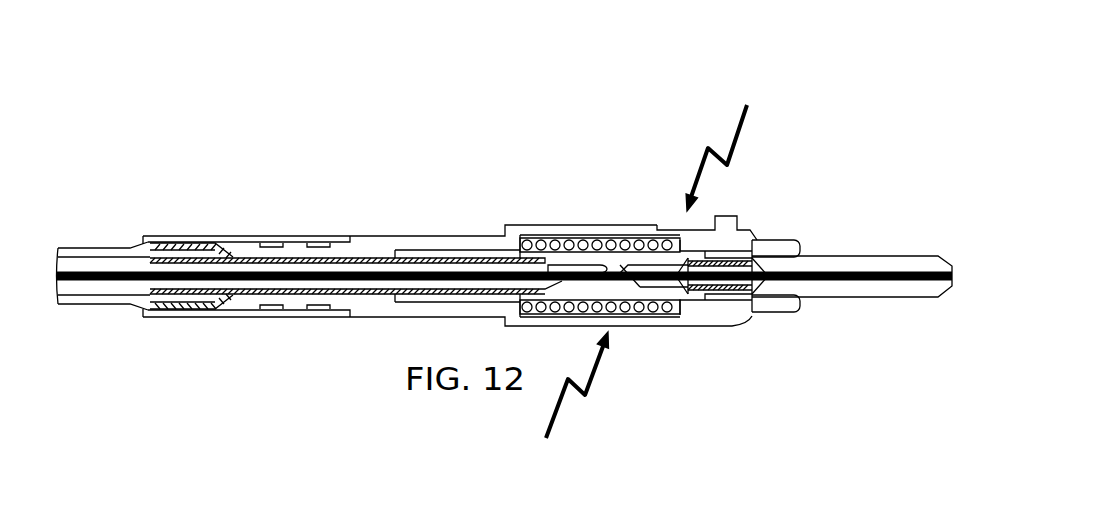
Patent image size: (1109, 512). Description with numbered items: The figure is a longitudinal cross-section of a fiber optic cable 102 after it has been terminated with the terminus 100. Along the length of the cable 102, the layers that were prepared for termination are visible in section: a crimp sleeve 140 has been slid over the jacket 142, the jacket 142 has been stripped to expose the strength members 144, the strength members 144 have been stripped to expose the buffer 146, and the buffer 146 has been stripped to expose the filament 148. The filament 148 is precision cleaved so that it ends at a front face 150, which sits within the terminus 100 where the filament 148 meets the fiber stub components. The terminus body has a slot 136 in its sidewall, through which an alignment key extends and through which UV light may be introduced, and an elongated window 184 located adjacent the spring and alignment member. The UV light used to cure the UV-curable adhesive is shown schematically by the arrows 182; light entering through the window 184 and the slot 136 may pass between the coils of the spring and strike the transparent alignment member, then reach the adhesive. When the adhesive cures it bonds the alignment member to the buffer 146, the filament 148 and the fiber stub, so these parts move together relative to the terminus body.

The terminus 100 is at (382, 242).
The fiber optic cable 102 is at (95, 252).
The slot 136 is at (672, 232).
The crimp sleeve 140 is at (232, 235).
The jacket 142 is at (180, 247).
The strength members 144 is at (263, 247).
The buffer 146 is at (437, 265).
The filament 148 is at (578, 278).
The front face 150 is at (620, 278).
The arrows 182 is at (740, 133).
The elongated window 184 is at (643, 316).